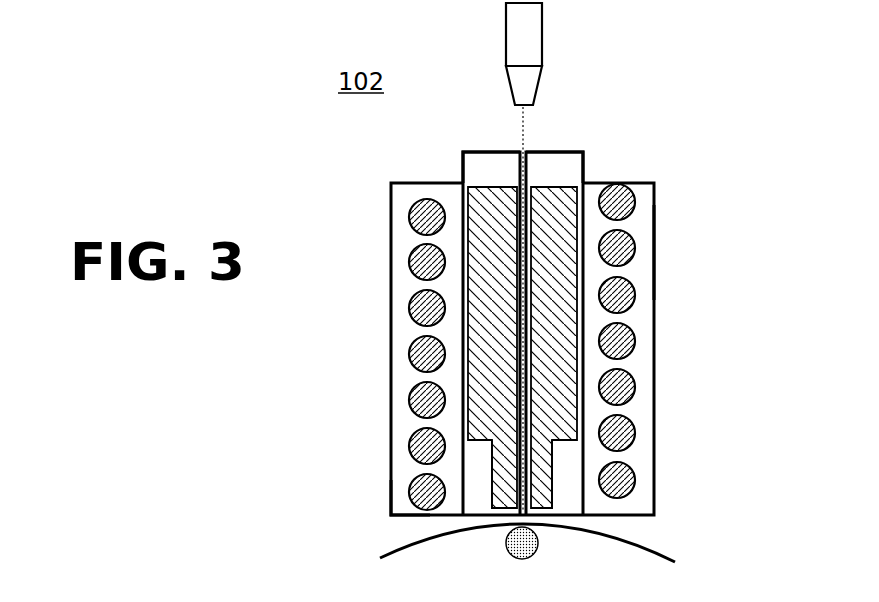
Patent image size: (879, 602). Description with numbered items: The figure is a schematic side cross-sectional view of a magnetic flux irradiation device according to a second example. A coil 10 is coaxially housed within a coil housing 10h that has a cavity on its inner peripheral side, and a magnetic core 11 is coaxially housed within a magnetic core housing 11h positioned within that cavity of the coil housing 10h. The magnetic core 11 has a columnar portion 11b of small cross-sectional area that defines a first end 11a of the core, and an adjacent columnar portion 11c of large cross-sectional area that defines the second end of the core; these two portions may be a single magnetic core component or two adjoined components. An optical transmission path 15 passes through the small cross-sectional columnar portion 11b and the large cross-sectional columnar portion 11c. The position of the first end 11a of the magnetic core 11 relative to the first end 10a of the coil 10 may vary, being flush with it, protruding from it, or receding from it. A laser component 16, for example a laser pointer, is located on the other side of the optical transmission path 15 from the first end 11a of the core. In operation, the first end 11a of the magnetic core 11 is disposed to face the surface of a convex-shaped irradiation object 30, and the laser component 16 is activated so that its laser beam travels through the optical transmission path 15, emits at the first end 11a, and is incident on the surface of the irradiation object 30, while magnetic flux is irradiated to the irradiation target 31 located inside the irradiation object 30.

The coil 10 is at (628, 293).
The coil housing 10h is at (654, 228).
The first end of the coil 10a is at (403, 518).
The magnetic core 11 is at (490, 205).
The magnetic core housing 11h is at (568, 150).
The columnar portion of large cross-sectional area 11c is at (490, 243).
The columnar portion of small cross-sectional area 11b is at (507, 477).
The first end of the magnetic core 11a is at (540, 512).
The optical transmission path 15 is at (507, 327).
The laser component 16 is at (527, 33).
The irradiation object 30 is at (667, 546).
The irradiation target 31 is at (508, 557).